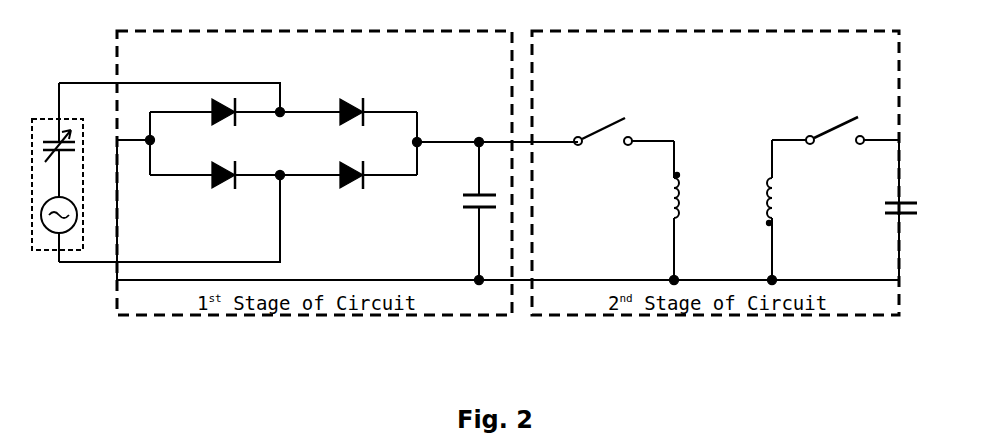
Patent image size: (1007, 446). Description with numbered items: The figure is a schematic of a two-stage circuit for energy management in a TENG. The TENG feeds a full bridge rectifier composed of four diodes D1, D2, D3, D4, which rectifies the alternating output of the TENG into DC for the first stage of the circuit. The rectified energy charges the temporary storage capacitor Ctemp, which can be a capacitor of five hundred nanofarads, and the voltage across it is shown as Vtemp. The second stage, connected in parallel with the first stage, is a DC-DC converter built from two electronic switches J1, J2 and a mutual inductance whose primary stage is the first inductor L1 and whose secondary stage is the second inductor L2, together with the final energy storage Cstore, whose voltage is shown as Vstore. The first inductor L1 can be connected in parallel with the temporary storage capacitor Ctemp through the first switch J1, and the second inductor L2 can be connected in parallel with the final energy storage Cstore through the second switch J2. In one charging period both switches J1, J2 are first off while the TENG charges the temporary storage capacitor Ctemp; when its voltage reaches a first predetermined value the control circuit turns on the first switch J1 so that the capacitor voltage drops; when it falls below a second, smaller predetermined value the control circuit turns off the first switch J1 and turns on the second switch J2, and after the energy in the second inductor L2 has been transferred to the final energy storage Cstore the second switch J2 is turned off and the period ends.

The element TENG is at (77, 172).
The diode D1 is at (222, 123).
The diode D2 is at (350, 123).
The diode D3 is at (350, 187).
The diode D4 is at (222, 186).
The temporary storage capacitor Ctemp is at (494, 211).
The voltage across temporary capacitor Vtemp is at (432, 207).
The first switch J1 is at (624, 130).
The second switch J2 is at (841, 130).
The first inductor L1 is at (662, 210).
The second inductor L2 is at (774, 210).
The final energy storage Cstore is at (914, 210).
The voltage across storage capacitor Vstore is at (848, 212).